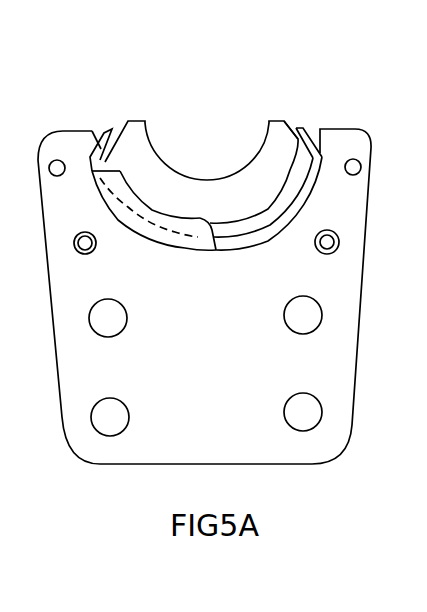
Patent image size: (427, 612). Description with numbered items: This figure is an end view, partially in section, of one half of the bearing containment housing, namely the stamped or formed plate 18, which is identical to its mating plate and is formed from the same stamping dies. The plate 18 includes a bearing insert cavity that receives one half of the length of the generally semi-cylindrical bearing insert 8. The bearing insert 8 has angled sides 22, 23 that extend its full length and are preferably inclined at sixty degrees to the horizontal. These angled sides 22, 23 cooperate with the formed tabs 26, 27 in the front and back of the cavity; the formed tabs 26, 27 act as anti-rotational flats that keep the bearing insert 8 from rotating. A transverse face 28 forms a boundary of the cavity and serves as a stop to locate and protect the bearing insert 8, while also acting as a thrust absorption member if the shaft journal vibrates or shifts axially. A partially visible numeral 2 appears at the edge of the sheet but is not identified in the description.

The plate 18 is at (363, 268).
The bearing insert 8 is at (182, 172).
The angled side 22 is at (130, 119).
The angled side 23 is at (285, 120).
The formed tab 27 is at (104, 133).
The formed tab 26 is at (302, 130).
The transverse face 28 is at (152, 224).
The assembly 2 is at (421, 347).